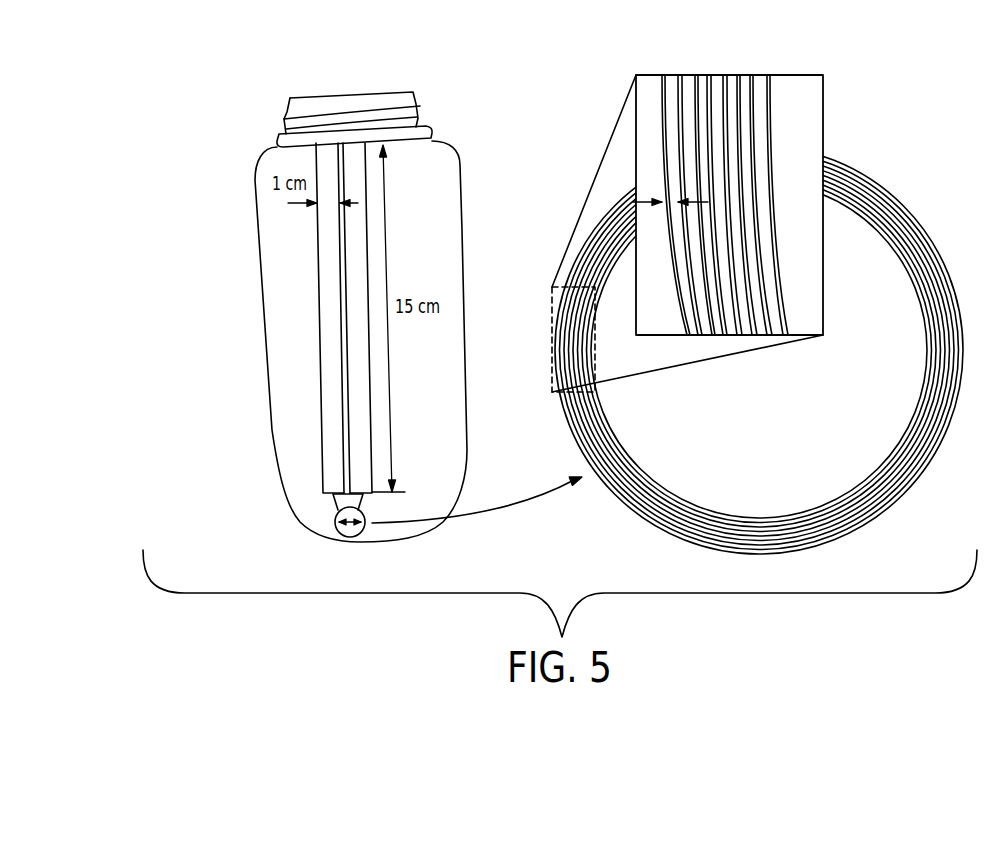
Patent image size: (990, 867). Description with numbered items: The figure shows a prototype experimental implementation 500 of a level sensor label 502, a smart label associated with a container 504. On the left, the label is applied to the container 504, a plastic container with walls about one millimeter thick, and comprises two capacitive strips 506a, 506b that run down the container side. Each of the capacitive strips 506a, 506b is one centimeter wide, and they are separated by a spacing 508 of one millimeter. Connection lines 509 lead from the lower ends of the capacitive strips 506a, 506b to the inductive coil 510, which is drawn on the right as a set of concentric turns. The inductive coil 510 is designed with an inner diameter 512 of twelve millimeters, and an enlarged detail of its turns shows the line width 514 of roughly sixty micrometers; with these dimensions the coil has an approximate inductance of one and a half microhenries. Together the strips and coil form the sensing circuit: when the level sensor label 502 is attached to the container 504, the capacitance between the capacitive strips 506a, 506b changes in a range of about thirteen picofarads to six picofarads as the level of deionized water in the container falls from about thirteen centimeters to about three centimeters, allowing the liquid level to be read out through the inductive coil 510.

The experimental implementation 500 is at (143, 117).
The level sensor label 502 is at (300, 290).
The container 504 is at (231, 173).
The capacitive strip 506a is at (330, 152).
The capacitive strip 506b is at (357, 153).
The spacing 508 is at (337, 146).
The connection lines 509 is at (325, 495).
The inductive coil 510 is at (337, 515).
The inner diameter 512 is at (231, 504).
The line width 514 is at (675, 75).